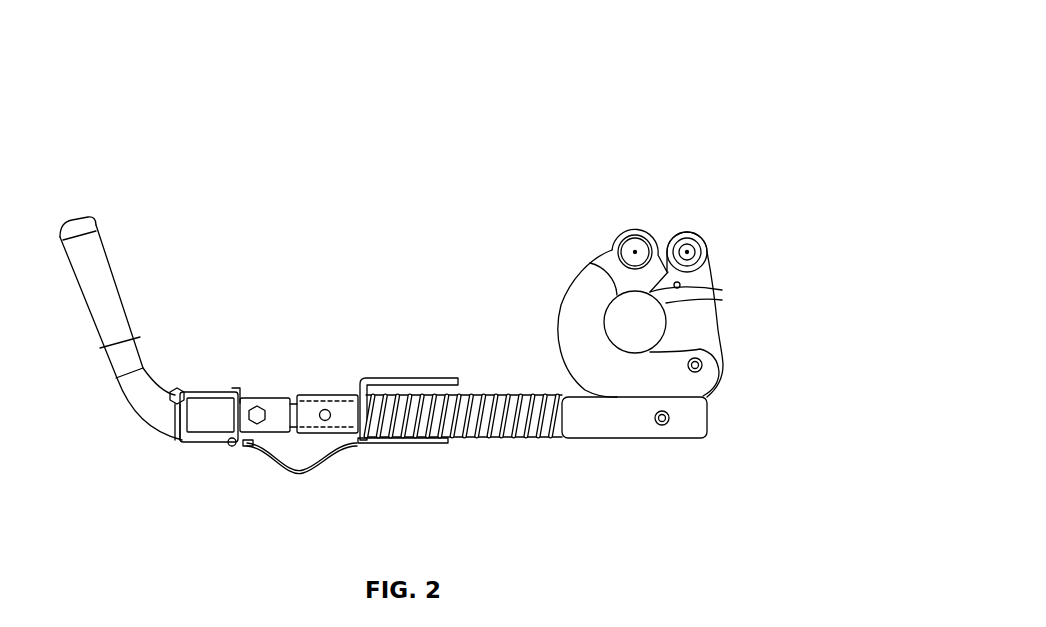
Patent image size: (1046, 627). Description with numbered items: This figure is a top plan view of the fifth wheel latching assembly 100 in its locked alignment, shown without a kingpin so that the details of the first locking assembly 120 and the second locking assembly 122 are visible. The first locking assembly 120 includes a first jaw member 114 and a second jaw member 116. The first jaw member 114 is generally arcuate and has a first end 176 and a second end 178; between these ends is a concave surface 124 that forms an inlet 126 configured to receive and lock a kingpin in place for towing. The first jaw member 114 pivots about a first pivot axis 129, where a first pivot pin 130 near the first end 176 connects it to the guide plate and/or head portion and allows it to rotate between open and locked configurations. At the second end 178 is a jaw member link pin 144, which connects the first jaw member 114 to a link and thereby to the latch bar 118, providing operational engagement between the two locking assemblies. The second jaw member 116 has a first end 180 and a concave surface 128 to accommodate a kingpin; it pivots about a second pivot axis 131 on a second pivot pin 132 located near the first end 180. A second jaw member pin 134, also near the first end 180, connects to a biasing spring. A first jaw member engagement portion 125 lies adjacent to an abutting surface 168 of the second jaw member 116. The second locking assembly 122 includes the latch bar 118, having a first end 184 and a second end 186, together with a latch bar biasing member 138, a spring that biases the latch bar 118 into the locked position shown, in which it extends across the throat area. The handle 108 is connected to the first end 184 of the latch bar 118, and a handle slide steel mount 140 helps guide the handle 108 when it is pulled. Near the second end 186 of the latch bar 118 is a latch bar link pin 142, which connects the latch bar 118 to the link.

The latching assembly 100 is at (120, 143).
The handle 108 is at (106, 273).
The first jaw member 114 is at (577, 305).
The second jaw member 116 is at (708, 317).
The latch bar 118 is at (594, 428).
The first locking assembly 120 is at (566, 222).
The second locking assembly 122 is at (486, 453).
The concave surface 124 is at (592, 263).
The first jaw member engagement portion 125 is at (703, 246).
The inlet 126 is at (639, 335).
The concave surface 128 is at (722, 300).
The first pivot axis 129 is at (634, 251).
The first pivot pin 130 is at (617, 248).
The second pivot axis 131 is at (697, 246).
The second pivot pin 132 is at (683, 233).
The second jaw member pin 134 is at (706, 262).
The latch bar biasing member 138 is at (510, 438).
The handle slide steel mount 140 is at (398, 380).
The latch bar link pin 142 is at (672, 420).
The jaw member link pin 144 is at (701, 365).
The abutting surface 168 is at (680, 286).
The first end 176 is at (652, 242).
The second end 178 is at (718, 378).
The first end 180 is at (688, 250).
The first end 184 is at (303, 424).
The second end 186 is at (705, 417).